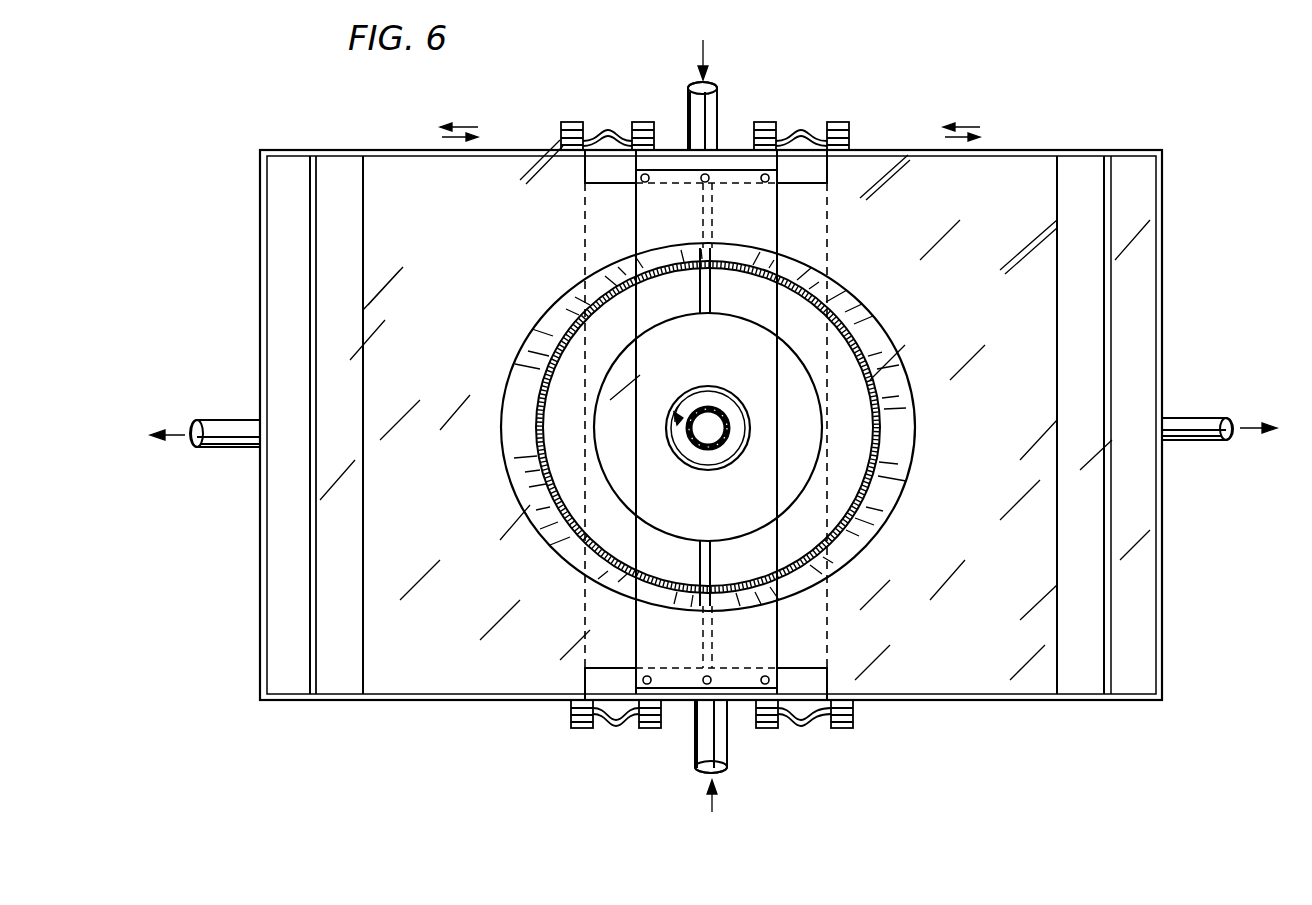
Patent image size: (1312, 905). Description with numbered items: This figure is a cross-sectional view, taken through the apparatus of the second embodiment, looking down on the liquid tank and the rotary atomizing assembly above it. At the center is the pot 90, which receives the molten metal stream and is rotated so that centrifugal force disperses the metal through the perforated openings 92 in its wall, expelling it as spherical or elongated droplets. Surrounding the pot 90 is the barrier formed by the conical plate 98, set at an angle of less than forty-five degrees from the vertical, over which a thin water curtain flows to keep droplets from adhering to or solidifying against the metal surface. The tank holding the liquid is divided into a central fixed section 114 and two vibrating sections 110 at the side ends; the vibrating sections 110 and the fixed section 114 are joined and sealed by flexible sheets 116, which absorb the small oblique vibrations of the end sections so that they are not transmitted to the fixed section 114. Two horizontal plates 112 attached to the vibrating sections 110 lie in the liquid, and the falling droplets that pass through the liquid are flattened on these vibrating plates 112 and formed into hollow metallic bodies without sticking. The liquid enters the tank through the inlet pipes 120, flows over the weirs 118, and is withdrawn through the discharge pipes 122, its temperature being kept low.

The pot 90 is at (703, 405).
The perforated openings 92 is at (718, 407).
The conical plate 98 is at (906, 410).
The vibrating sections 110 is at (1025, 150).
The horizontal plates 112 is at (885, 166).
The fixed section 114 is at (731, 150).
The flexible sheets 116 is at (796, 150).
The weirs 118 is at (1113, 172).
The inlet pipes 120 is at (717, 95).
The discharge pipes 122 is at (220, 428).